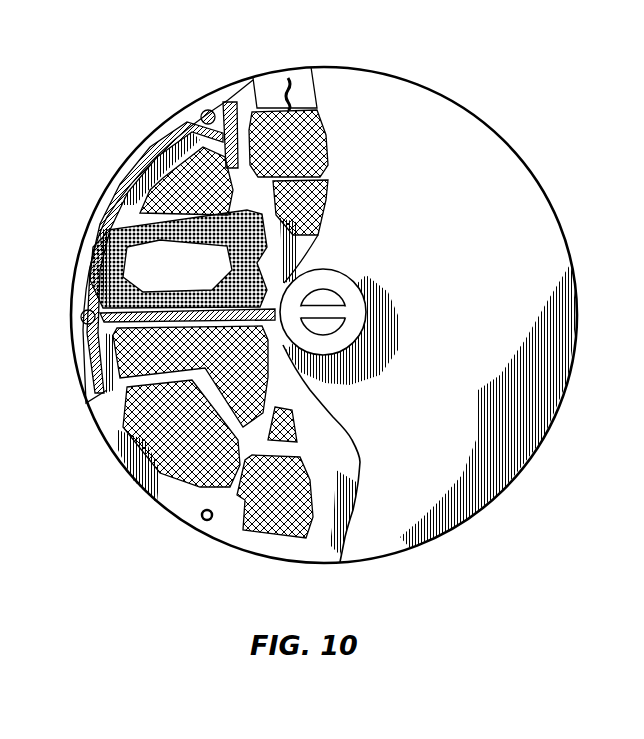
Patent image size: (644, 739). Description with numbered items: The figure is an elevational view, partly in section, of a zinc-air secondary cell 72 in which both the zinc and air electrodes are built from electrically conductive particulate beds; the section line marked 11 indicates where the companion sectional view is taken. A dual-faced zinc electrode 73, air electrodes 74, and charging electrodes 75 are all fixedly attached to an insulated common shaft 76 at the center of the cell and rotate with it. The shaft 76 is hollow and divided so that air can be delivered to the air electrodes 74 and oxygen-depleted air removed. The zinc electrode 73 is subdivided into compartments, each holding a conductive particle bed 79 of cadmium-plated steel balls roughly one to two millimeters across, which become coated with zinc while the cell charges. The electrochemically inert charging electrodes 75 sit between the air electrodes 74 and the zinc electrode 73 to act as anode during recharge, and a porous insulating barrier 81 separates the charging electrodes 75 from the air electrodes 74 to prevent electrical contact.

The zinc-air cell 72 is at (405, 67).
The dual-faced zinc electrode 73 is at (278, 70).
The air electrodes 74 is at (385, 538).
The charging electrodes 75 is at (253, 537).
The insulated common shaft 76 is at (343, 284).
The conductive particle bed 79 is at (190, 277).
The porous insulating barrier 81 is at (313, 545).
The section line 11- 11 is at (324, 110).